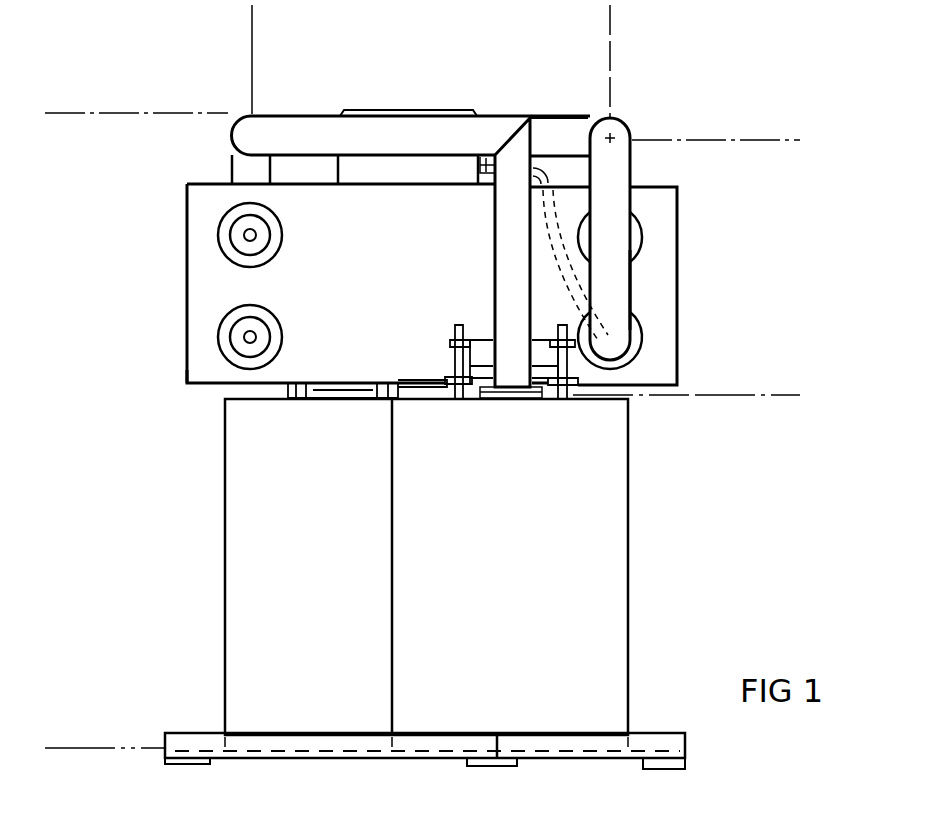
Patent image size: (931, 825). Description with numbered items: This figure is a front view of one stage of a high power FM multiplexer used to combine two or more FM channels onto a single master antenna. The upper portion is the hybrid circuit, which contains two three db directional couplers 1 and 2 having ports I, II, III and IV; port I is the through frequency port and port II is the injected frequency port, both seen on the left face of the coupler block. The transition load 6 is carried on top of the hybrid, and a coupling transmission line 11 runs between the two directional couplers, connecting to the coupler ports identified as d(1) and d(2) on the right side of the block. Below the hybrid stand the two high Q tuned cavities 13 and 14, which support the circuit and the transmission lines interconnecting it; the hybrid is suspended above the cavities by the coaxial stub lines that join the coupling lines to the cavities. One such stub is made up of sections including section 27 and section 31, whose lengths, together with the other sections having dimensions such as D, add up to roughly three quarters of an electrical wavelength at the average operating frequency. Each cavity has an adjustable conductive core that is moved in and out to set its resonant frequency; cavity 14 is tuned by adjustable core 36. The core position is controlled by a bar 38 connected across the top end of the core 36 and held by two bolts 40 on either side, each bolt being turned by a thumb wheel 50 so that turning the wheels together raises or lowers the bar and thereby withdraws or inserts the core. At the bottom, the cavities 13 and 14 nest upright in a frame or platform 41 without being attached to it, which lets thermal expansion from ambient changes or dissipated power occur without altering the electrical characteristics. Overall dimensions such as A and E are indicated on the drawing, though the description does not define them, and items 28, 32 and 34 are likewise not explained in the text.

The directional coupler 1 is at (186, 185).
The directional coupler 2 is at (186, 382).
The transition load 6 is at (405, 110).
The coupling transmission line 11 is at (632, 282).
The tuned cavity 13 is at (225, 498).
The tuned cavity 14 is at (628, 503).
The stub line section 27 is at (632, 172).
The support posts 28 is at (232, 165).
The stub line section 31 is at (547, 117).
The tube 32 is at (322, 114).
The vertical plate 34 is at (493, 252).
The adjustable core 36 is at (470, 352).
The bar 38 is at (460, 325).
The bolt 40 is at (452, 371).
The frame or platform 41 is at (660, 735).
The thumb wheel 50 is at (445, 381).
The through frequency port I is at (213, 331).
The injected frequency port II is at (213, 232).
The width dimension A is at (610, 57).
The dimension D is at (800, 141).
The overall height dimension E is at (64, 748).